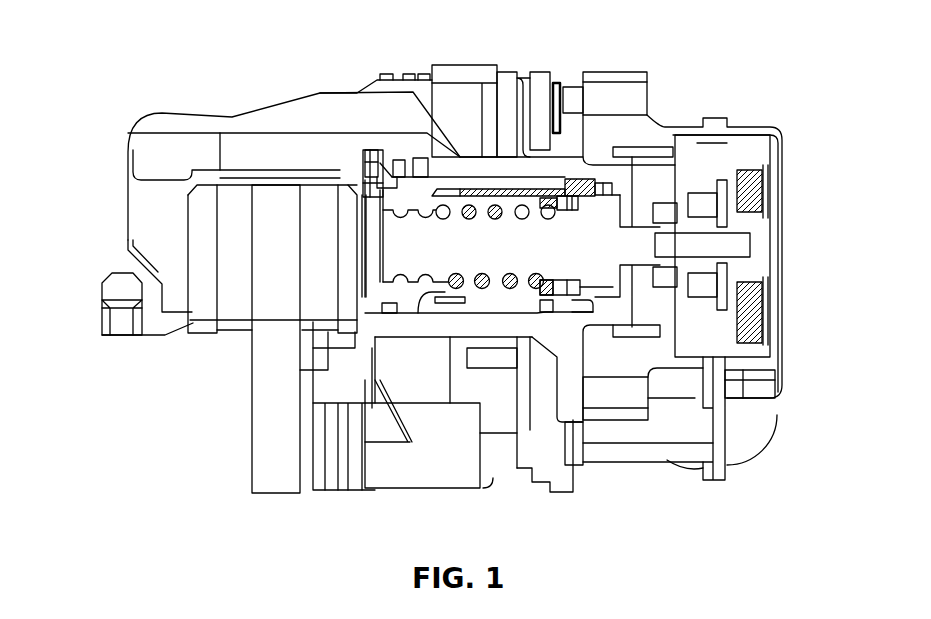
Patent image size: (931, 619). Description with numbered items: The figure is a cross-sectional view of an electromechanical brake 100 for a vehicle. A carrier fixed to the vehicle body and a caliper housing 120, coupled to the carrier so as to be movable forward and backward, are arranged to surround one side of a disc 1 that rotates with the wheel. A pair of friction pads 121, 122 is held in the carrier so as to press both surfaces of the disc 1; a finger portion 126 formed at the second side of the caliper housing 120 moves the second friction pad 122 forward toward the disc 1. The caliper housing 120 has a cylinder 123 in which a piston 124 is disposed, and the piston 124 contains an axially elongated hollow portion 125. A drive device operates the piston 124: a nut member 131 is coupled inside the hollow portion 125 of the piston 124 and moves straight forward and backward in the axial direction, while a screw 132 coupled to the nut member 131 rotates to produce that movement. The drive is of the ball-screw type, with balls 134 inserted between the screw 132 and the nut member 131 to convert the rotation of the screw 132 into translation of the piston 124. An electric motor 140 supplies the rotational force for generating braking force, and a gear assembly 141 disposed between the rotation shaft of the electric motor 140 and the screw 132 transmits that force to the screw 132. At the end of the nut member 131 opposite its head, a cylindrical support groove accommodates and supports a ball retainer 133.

The disc 1 is at (263, 423).
The electromechanical brake 100 is at (654, 67).
The caliper housing 120 is at (151, 111).
The first friction pad 121 is at (320, 305).
The second friction pad 122 is at (230, 308).
The cylinder 123 is at (466, 178).
The piston 124 is at (375, 188).
The hollow portion 125 is at (422, 292).
The finger portion 126 is at (132, 218).
The nut member 131 is at (517, 292).
The screw 132 is at (535, 220).
The ball retainer 133 is at (545, 290).
The balls 134 is at (505, 300).
The electric motor 140 is at (750, 430).
The gear assembly 141 is at (757, 315).